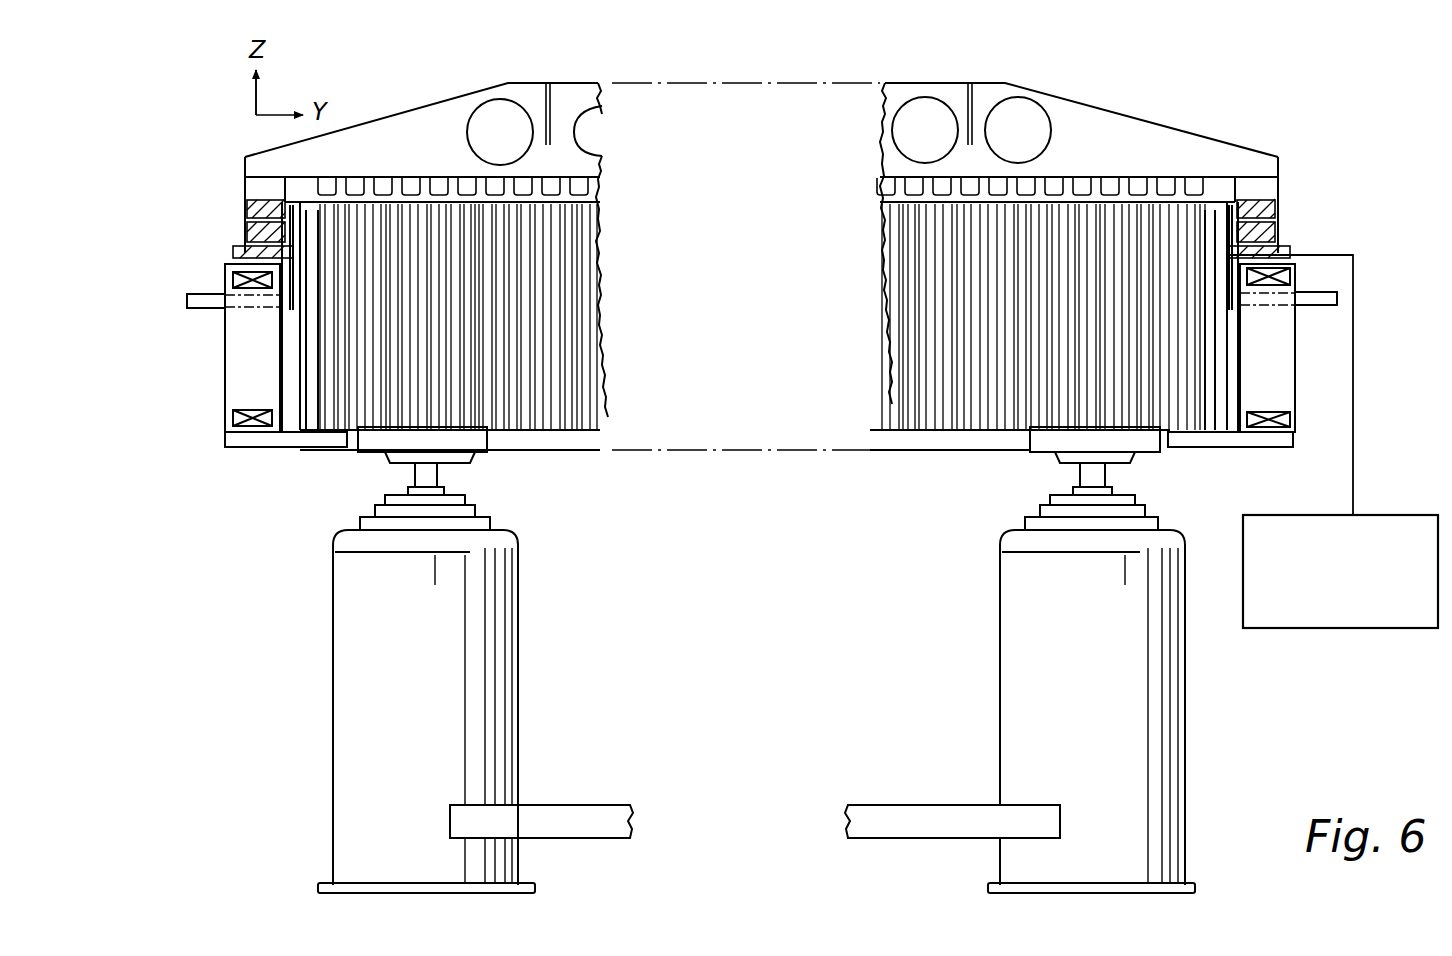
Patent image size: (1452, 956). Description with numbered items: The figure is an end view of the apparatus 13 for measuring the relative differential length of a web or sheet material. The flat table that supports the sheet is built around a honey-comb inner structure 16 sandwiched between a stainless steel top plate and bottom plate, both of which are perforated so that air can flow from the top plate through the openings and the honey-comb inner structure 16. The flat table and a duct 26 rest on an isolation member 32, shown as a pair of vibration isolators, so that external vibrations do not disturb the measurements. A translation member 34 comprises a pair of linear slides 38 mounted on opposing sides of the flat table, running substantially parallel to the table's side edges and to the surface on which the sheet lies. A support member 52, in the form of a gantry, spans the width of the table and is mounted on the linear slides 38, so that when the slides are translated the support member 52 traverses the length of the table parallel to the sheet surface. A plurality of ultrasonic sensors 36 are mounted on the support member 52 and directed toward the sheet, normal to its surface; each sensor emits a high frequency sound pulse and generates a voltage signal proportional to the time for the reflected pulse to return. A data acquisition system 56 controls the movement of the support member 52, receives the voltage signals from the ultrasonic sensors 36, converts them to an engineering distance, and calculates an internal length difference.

The apparatus 13 is at (1183, 99).
The honey-comb inner structure 16 is at (425, 370).
The duct 26 is at (957, 440).
The isolation member 32 is at (422, 669).
The translation member 34 is at (247, 210).
The ultrasonic sensors 36 is at (1193, 177).
The linear slides 38 is at (247, 234).
The support member 52 is at (425, 104).
The data acquisition system 56 is at (1410, 514).